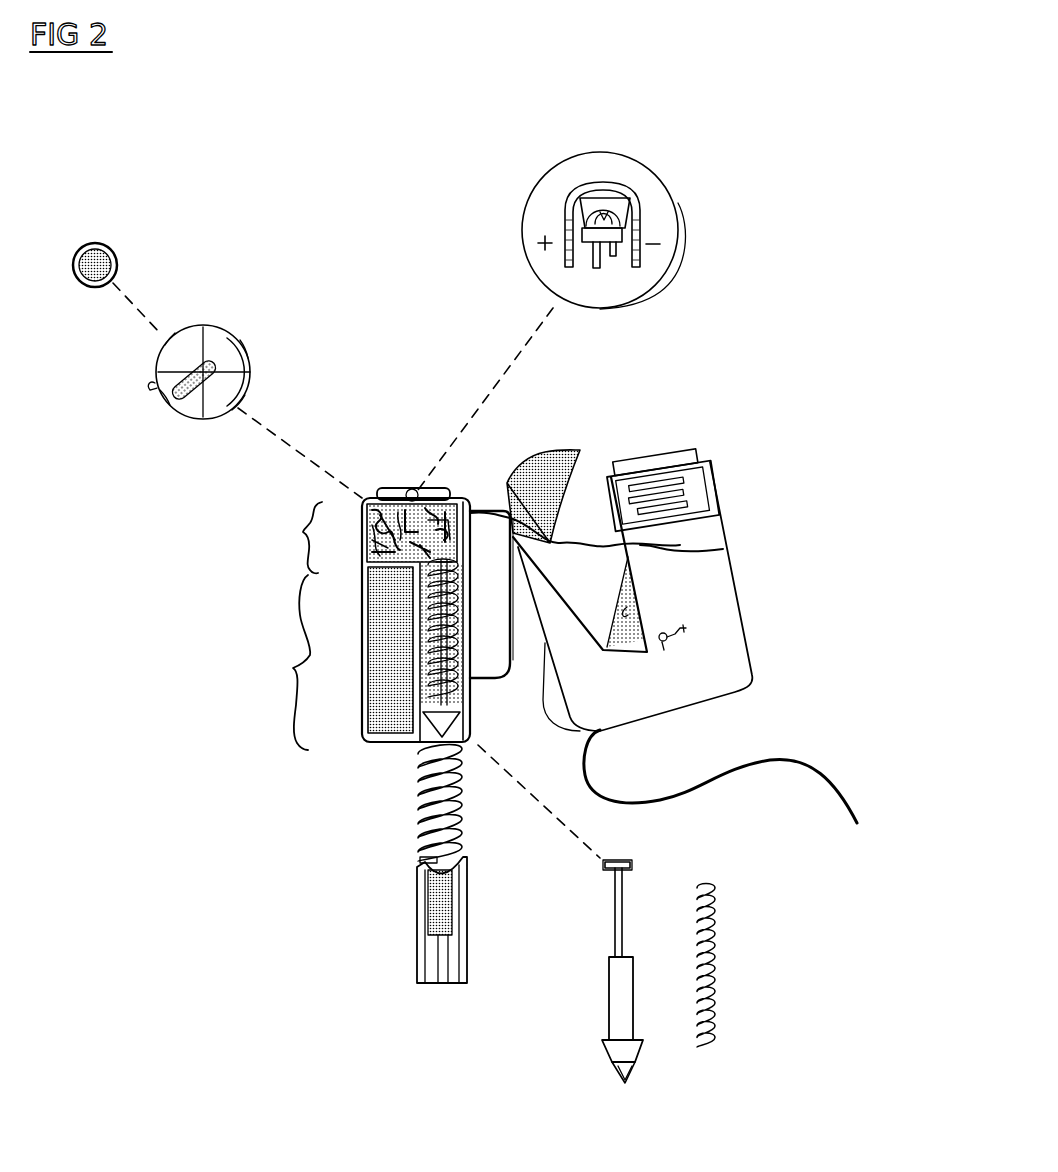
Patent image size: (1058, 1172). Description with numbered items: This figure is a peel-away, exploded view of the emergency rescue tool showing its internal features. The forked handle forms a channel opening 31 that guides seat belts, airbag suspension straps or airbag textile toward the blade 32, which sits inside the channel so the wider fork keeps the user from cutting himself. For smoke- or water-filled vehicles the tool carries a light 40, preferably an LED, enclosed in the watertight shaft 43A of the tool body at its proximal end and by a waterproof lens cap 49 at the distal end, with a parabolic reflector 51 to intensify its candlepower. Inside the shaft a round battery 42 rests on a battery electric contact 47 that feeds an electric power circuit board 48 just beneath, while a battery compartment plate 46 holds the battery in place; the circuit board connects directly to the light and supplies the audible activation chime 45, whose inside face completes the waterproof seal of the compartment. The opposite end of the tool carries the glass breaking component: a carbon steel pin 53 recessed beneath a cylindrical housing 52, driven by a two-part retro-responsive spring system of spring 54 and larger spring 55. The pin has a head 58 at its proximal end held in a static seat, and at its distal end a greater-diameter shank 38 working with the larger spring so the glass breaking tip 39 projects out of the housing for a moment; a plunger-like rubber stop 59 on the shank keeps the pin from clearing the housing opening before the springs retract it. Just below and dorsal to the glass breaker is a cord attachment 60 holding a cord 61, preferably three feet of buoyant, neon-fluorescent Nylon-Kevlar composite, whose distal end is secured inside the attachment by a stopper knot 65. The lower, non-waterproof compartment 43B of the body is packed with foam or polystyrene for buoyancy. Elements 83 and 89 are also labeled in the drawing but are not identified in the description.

The channel opening 31 is at (562, 530).
The blade 32 is at (723, 549).
The shank 38 is at (640, 1014).
The glass breaking tip 39 is at (634, 1087).
The light 40 is at (603, 270).
The battery 42 is at (120, 258).
The shaft 43A is at (371, 615).
The non-waterproof compartment 43B is at (283, 662).
The audible activation chime 45 is at (703, 473).
The battery compartment plate 46 is at (153, 388).
The battery electric contact 47 is at (183, 382).
The electric power circuit board 48 is at (376, 507).
The waterproof lens cap 49 is at (632, 180).
The parabolic reflector 51 is at (630, 187).
The cylindrical housing 52 is at (417, 690).
The pin 53 is at (628, 928).
The spring 54 is at (430, 640).
The larger spring 55 is at (414, 812).
The head 58 is at (637, 869).
The rubber stop 59 is at (644, 1058).
The cord attachment 60 is at (664, 654).
The cord 61 is at (845, 776).
The stopper knot 65 is at (690, 640).
The housing panel 83 is at (387, 627).
The strap 89 is at (628, 615).